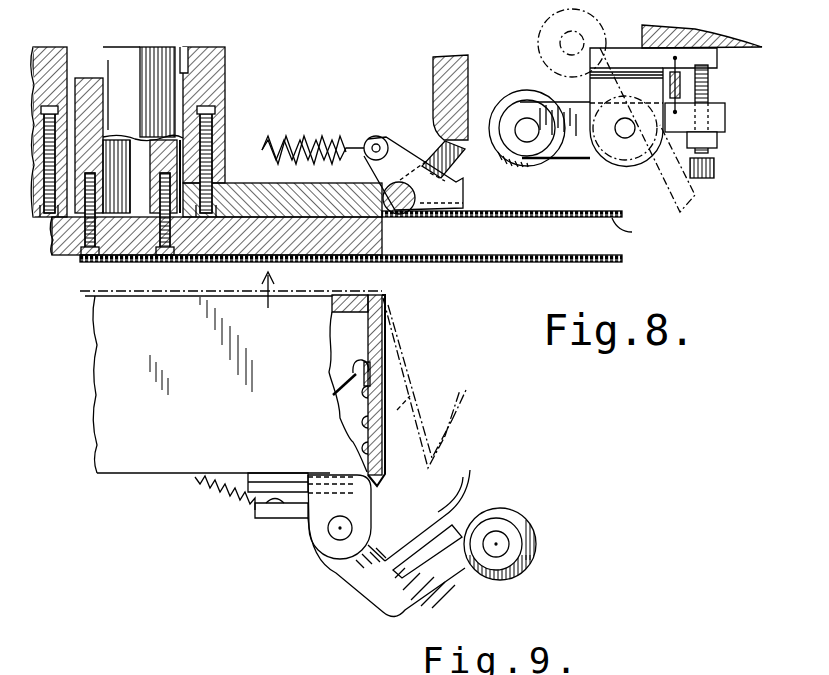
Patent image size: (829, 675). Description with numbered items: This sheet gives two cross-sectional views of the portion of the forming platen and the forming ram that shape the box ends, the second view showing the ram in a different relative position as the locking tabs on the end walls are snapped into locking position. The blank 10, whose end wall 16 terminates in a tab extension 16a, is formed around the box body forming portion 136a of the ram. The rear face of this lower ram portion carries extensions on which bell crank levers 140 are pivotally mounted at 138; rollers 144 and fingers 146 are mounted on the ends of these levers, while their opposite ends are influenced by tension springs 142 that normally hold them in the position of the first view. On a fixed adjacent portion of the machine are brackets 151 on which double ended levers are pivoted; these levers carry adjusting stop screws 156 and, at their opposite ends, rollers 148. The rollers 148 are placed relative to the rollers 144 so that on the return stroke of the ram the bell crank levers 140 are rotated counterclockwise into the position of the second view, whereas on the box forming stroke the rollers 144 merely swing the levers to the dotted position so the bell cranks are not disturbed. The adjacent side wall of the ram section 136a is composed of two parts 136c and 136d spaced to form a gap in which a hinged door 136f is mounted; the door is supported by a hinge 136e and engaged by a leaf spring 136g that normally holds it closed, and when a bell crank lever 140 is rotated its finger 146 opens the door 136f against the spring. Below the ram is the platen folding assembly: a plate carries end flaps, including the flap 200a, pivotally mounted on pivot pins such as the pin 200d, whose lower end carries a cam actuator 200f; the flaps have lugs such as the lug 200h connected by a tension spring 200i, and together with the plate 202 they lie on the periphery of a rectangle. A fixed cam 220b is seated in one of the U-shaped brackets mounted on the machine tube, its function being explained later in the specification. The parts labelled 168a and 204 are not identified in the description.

In FIG. 8, the blank 10 is at (594, 255).
In FIG. 9, the blank 10 is at (402, 356).
In FIG. 9, the end wall extension 16 is at (403, 426).
In FIG. 9, the tab extension 16a is at (450, 423).
In FIG. 9, the box body forming portion of the ram 136a is at (153, 470).
In FIG. 9, the side wall part 136c is at (384, 336).
In FIG. 9, the side wall part 136d is at (383, 467).
In FIG. 9, the hinge 136e is at (368, 403).
In FIG. 9, the hinged door 136f is at (384, 383).
In FIG. 9, the leaf spring 136g is at (345, 384).
In FIG. 9, the pivot 138 is at (336, 533).
In FIG. 9, the bell crank lever 140 is at (437, 580).
In FIG. 9, the tension spring 142 is at (255, 506).
In FIG. 9, the roller 144 is at (537, 556).
In FIG. 9, the finger 146 is at (472, 480).
In FIG. 8, the roller 148 is at (522, 170).
In FIG. 8, the bracket 151 is at (618, 165).
In FIG. 8, the adjusting stop screw 156 is at (712, 90).
In FIG. 8, the housing wall 168a is at (225, 102).
In FIG. 8, the flap 200a is at (645, 231).
In FIG. 8, the pivot pin 200d is at (470, 232).
In FIG. 8, the cam actuator 200f is at (452, 156).
In FIG. 8, the lug 200h is at (405, 150).
In FIG. 8, the tension spring 200i is at (305, 142).
In FIG. 8, the plate 202 is at (385, 242).
In FIG. 8, the shaft 204 is at (120, 62).
In FIG. 8, the fixed cam 220b is at (460, 82).